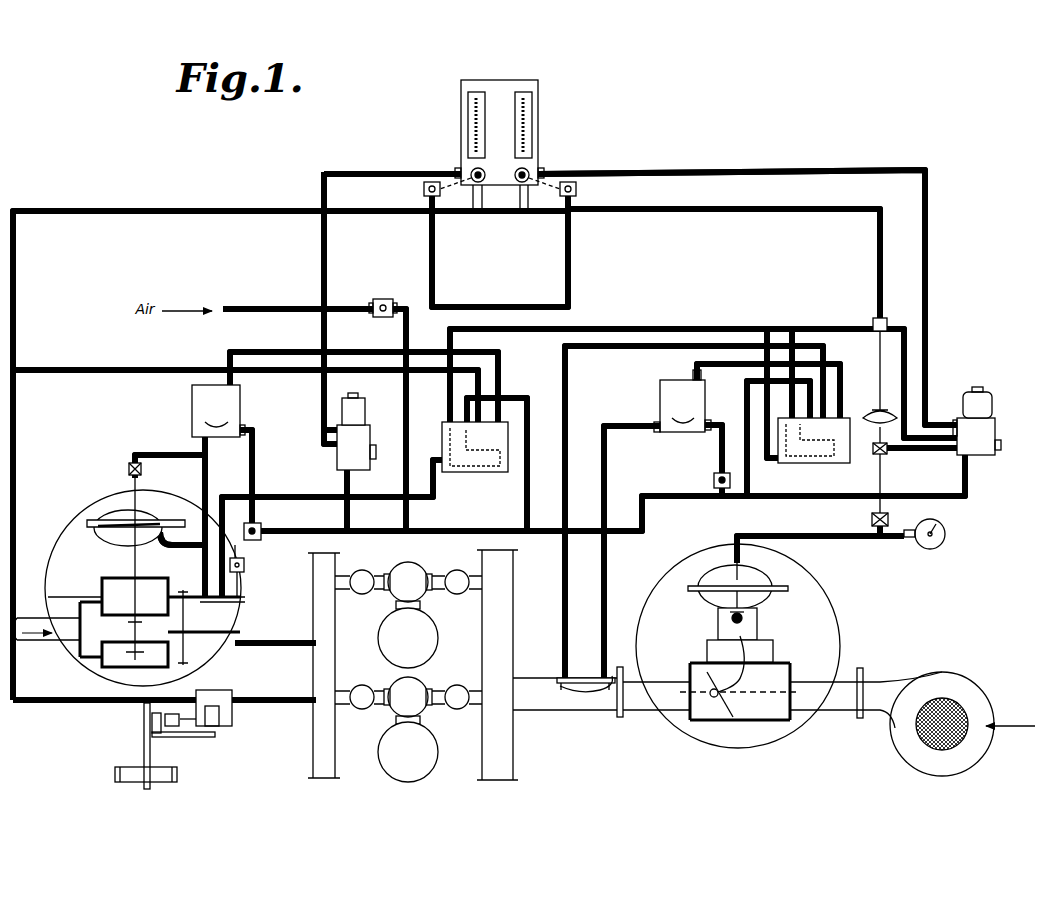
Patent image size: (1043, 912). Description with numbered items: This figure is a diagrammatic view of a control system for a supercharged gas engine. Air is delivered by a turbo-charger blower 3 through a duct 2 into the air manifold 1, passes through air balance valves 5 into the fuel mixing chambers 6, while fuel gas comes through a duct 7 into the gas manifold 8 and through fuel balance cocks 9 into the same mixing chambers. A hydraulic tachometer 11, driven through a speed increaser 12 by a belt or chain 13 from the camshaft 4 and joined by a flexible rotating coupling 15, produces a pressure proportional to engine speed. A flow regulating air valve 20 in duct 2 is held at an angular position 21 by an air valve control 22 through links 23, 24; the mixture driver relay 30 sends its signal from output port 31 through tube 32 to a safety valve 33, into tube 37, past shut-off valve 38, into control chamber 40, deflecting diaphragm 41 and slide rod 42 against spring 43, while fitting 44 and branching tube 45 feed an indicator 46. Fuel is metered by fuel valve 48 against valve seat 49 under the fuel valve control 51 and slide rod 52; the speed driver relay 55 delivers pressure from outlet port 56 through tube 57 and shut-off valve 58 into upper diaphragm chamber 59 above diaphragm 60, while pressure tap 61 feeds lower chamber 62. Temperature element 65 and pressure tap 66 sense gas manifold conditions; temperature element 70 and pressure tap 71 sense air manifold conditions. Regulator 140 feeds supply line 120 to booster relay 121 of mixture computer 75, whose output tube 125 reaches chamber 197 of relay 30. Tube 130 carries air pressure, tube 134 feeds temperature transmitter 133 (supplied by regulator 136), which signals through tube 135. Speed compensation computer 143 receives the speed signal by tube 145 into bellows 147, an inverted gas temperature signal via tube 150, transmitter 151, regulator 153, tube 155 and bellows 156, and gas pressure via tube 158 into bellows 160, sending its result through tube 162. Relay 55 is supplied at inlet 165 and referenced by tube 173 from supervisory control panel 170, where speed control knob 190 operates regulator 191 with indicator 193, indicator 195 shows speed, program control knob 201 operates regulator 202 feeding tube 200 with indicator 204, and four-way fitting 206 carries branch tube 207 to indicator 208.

The air manifold 1 is at (520, 708).
The duct 2 is at (824, 710).
The turbo-charger blower 3 is at (990, 750).
The engine camshaft 4 is at (178, 772).
The air balance valves 5 is at (457, 594).
The fuel mixing chambers 6 is at (416, 566).
The duct 7 is at (54, 646).
The gas manifold 8 is at (312, 648).
The fuel balance cocks 9 is at (362, 594).
The hydraulic tachometer 11 is at (234, 726).
The speed increaser 12 is at (150, 716).
The belt or chain 13 is at (142, 750).
The flexible rotating coupling 15 is at (182, 730).
The flow regulating air valve 20 is at (712, 716).
The adjustable angular position 21 is at (775, 727).
The air valve control 22 is at (700, 602).
The connecting link 23 is at (740, 692).
The connecting link 24 is at (758, 648).
The mixture driver relay 30 is at (990, 418).
The output port 31 is at (934, 452).
The pneumatic tube 32 is at (910, 452).
The safety valve 33 is at (876, 408).
The tube 37 is at (876, 468).
The shut-off valve 38 is at (872, 520).
The air valve control chamber 40 is at (714, 562).
The diaphragm 41 is at (710, 574).
The slide rod 42 is at (760, 600).
The spring 43 is at (748, 620).
The fitting 44 is at (898, 532).
The branching tube 45 is at (906, 540).
The indicator 46 is at (946, 540).
The flow regulating fuel valve 48 is at (180, 644).
The valve seat 49 is at (180, 624).
The fuel valve control 51 is at (100, 540).
The slide rod 52 is at (112, 552).
The speed driver relay 55 is at (364, 420).
The outlet port 56 is at (338, 462).
The tube 57 is at (148, 454).
The shut-off valve 58 is at (129, 466).
The upper diaphragm chamber 59 is at (124, 512).
The flexible diaphragm 60 is at (160, 516).
The pressure tap 61 is at (244, 594).
The lower diaphragm chamber 62 is at (104, 534).
The temperature element 65 is at (226, 606).
The pressure tap 66 is at (240, 604).
The temperature element 70 is at (596, 700).
The pressure tap 71 is at (560, 678).
The mixture computer 75 is at (786, 464).
The instrument pressure supply line 120 is at (407, 432).
The booster relay 121 is at (840, 448).
The mixture computer output tube 125 is at (790, 322).
The tube 130 is at (822, 352).
The temperature transmitter 133 is at (656, 378).
The tube 134 is at (612, 582).
The tube 135 is at (680, 364).
The air supply regulator 136 is at (714, 478).
The pressure regulator 140 is at (376, 298).
The speed compensation computer 143 is at (506, 478).
The tube 145 is at (110, 366).
The bellows 147 is at (498, 398).
The tube 150 is at (206, 490).
The temperature transmitter 151 is at (190, 384).
The air pressure regulator 153 is at (256, 526).
The tube 155 is at (252, 350).
The bellows 156 is at (512, 418).
The tube 158 is at (258, 496).
The bellows 160 is at (436, 474).
The tube 162 is at (622, 326).
The bottom inlet 165 is at (350, 474).
The supervisory control panel 170 is at (542, 80).
The tube 173 is at (324, 172).
The speed control knob 190 is at (482, 188).
The pressure regulator 191 is at (424, 188).
The indicator pointer device 193 is at (470, 108).
The indicator pointer device 195 is at (478, 100).
The chamber 197 is at (962, 402).
The tube 200 is at (930, 228).
The program control knob 201 is at (518, 188).
The pressure regulator 202 is at (578, 189).
The indicator pointer device 204 is at (528, 124).
The four-way tube fitting 206 is at (874, 318).
The branch tube 207 is at (765, 207).
The indicator pointer device 208 is at (520, 124).